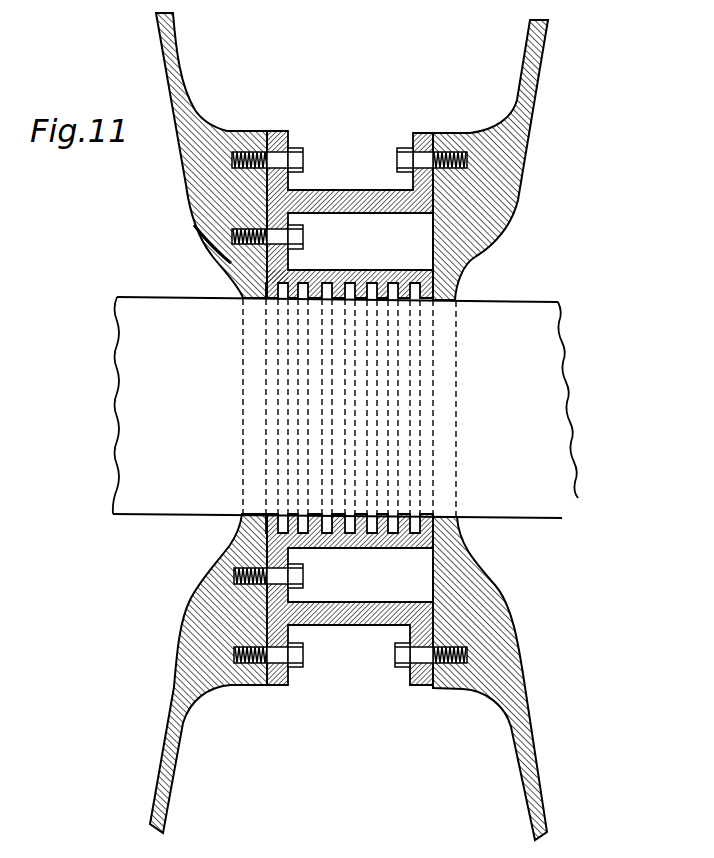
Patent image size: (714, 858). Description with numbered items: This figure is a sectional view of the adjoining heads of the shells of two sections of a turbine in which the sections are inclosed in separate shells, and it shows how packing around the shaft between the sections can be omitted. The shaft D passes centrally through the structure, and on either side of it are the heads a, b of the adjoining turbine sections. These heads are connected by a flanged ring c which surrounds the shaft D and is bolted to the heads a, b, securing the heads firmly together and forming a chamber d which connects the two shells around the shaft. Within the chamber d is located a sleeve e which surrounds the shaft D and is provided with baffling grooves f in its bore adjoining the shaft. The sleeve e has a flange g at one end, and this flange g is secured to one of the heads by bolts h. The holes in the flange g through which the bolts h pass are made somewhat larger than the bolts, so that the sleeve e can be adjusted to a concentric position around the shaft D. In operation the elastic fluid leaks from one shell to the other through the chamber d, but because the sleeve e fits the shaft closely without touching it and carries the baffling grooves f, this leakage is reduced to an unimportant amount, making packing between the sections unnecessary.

The head a is at (208, 673).
The head b is at (490, 678).
The flanged ring c is at (360, 643).
The chamber d is at (350, 609).
The sleeve e is at (350, 248).
The baffling grooves f is at (282, 298).
The flange g is at (272, 219).
The bolts h is at (266, 237).
The shaft D is at (358, 407).